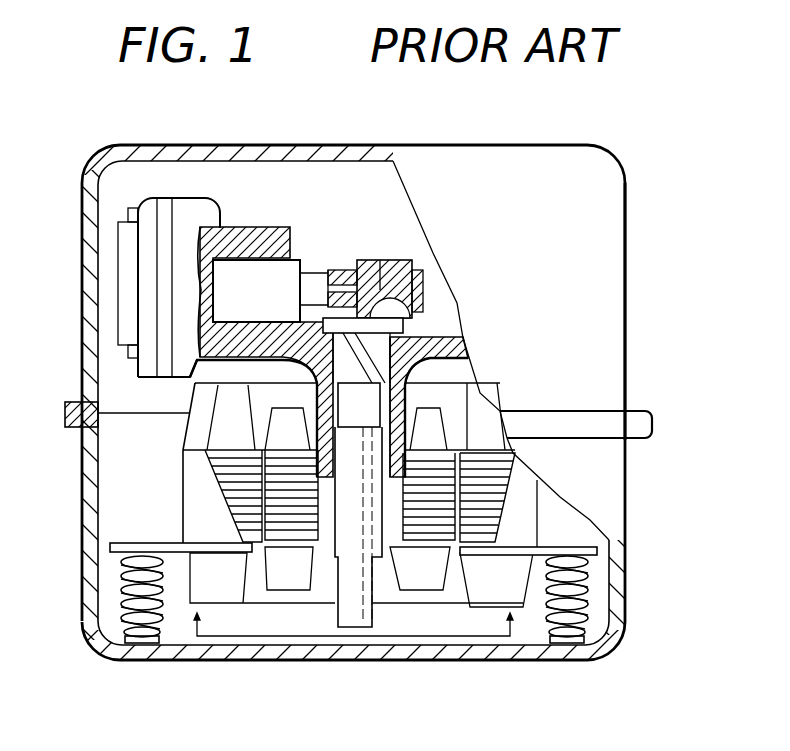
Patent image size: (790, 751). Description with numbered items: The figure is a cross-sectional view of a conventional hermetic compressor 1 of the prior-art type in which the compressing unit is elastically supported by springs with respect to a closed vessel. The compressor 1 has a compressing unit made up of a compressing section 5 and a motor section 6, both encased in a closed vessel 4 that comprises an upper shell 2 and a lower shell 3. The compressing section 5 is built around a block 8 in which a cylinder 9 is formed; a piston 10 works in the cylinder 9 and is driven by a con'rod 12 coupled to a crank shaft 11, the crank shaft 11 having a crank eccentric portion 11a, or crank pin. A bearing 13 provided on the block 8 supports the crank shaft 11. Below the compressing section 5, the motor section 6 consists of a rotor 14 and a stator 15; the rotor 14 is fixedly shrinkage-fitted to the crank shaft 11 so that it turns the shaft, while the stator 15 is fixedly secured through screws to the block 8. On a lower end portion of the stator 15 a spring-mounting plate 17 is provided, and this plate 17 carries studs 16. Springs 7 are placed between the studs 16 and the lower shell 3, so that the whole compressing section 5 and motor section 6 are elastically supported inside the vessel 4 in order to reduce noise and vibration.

The hermetic compressor 1 is at (652, 258).
The upper shell 2 is at (610, 375).
The lower shell 3 is at (615, 493).
The closed vessel 4 is at (652, 402).
The compressing section 5 is at (265, 192).
The motor section 6 is at (113, 452).
The springs 7 is at (127, 597).
The block 8 is at (438, 332).
The cylinder 9 is at (280, 240).
The piston 10 is at (265, 302).
The crank shaft 11 is at (371, 486).
The crank eccentric portion 11a is at (392, 262).
The con'rod 12 is at (312, 278).
The bearing 13 is at (397, 410).
The rotor 14 is at (390, 533).
The stator 15 is at (190, 505).
The studs 16 is at (120, 553).
The spring-mounting plate 17 is at (578, 545).